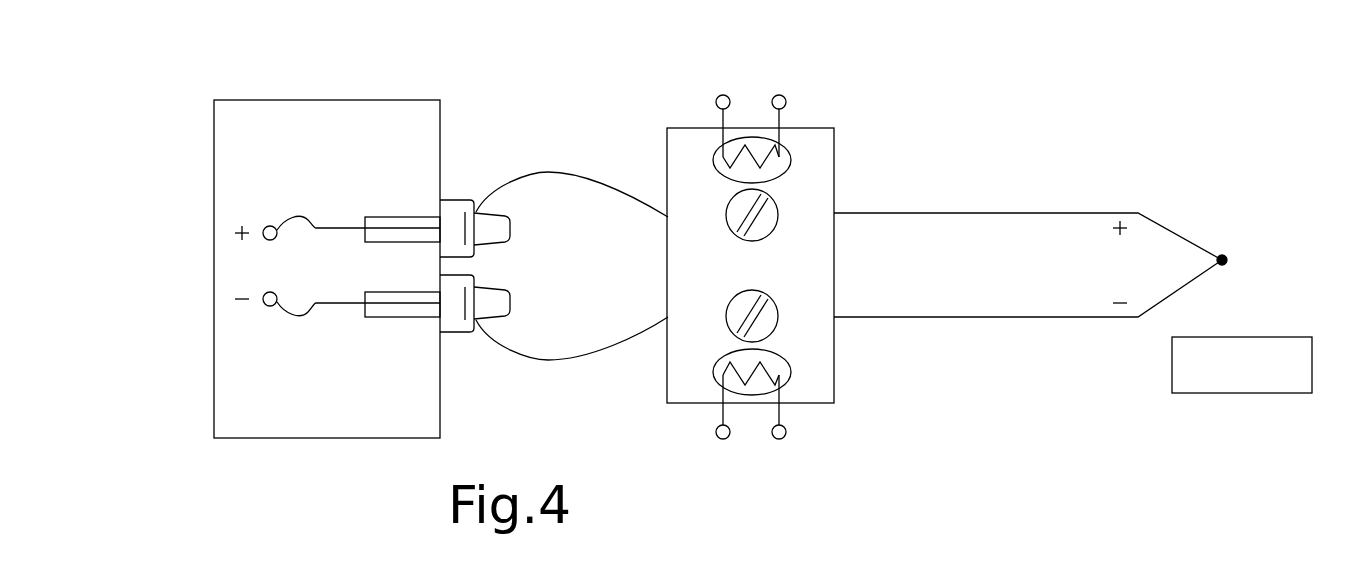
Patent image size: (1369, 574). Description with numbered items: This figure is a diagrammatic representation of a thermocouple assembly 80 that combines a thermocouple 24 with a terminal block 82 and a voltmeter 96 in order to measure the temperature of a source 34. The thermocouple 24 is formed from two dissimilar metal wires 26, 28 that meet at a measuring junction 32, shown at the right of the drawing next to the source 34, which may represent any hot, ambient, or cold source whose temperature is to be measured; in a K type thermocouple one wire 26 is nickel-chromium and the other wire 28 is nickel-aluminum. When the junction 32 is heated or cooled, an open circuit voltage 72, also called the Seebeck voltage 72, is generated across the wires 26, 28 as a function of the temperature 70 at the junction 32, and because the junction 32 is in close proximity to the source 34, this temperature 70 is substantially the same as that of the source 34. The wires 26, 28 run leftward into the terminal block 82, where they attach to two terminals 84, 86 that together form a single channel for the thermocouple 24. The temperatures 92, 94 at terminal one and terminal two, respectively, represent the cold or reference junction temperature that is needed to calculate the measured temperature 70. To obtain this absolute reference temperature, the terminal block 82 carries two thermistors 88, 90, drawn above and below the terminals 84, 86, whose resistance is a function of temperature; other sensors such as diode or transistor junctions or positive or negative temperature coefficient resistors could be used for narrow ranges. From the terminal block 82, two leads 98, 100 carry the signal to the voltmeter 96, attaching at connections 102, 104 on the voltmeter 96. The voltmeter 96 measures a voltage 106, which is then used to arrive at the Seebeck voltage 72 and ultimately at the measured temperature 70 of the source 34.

The thermocouple 24 is at (1048, 236).
The wire 26 is at (1008, 213).
The wire 28 is at (1008, 317).
The junction 32 is at (1222, 256).
The source 34 is at (1255, 337).
The temperature T_M 70 is at (1268, 240).
The open circuit voltage 72 is at (1088, 262).
The thermocouple assembly 80 is at (1003, 112).
The terminal block 82 is at (848, 138).
The terminal 84 is at (730, 226).
The terminal 86 is at (730, 300).
The thermistor 88 is at (755, 140).
The thermistor 90 is at (748, 395).
The temperature 92 is at (788, 210).
The temperature 94 is at (787, 322).
The voltmeter 96 is at (226, 340).
The lead 98 is at (595, 178).
The lead 100 is at (590, 356).
The connection 102 is at (478, 211).
The connection 104 is at (478, 322).
The voltage 106 is at (228, 260).